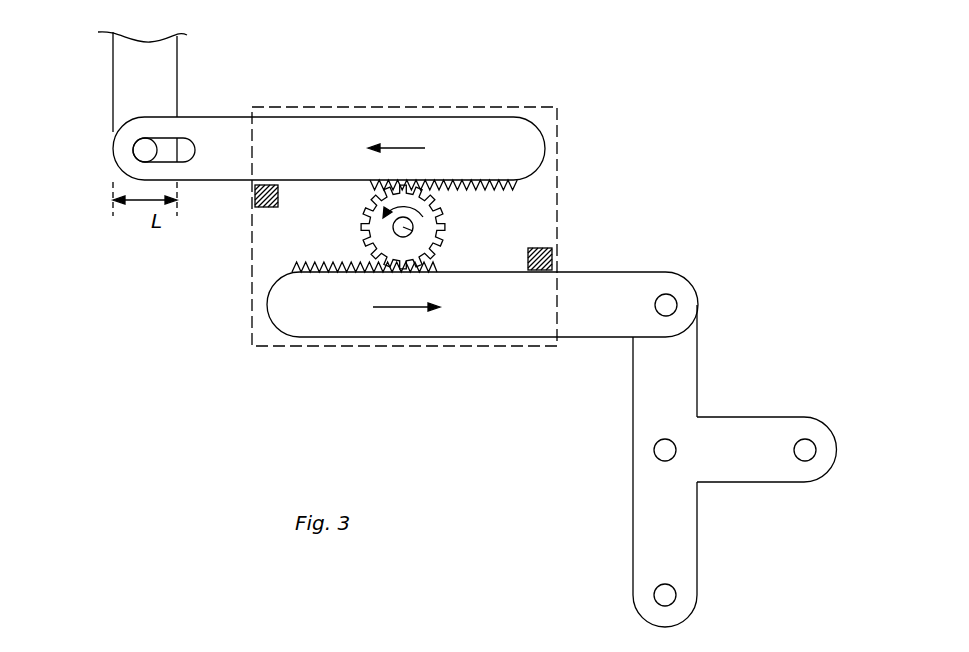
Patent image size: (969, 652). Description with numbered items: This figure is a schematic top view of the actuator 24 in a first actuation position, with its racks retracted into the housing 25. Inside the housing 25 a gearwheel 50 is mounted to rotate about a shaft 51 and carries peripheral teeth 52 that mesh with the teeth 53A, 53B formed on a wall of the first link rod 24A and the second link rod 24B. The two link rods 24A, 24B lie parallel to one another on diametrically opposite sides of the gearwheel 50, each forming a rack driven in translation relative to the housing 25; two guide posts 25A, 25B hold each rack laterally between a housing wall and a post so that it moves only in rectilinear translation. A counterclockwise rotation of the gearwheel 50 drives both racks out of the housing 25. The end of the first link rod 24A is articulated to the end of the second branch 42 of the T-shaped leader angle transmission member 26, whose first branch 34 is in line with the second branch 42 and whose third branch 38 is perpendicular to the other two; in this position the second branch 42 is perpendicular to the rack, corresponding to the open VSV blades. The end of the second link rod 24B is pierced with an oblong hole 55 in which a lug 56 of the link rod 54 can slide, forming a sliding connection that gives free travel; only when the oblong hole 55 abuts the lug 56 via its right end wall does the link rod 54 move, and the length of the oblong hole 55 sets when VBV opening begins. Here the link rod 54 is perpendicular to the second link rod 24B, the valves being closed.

The actuator 24 is at (540, 77).
The first link rod 24A is at (612, 292).
The second link rod 24B is at (338, 140).
The housing 25 is at (557, 137).
The guide post 25A is at (557, 255).
The guide post 25B is at (255, 196).
The leader angle transmission member 26 is at (703, 466).
The first branch 34 is at (653, 533).
The third branch 38 is at (755, 462).
The second branch 42 is at (653, 382).
The gearwheel 50 is at (373, 235).
The shaft 51 is at (412, 230).
The teeth 52 is at (362, 220).
The teeth 53A is at (297, 265).
The teeth 53B is at (507, 187).
The link rod 54 is at (132, 68).
The oblong hole 55 is at (182, 137).
The lug 56 is at (135, 150).